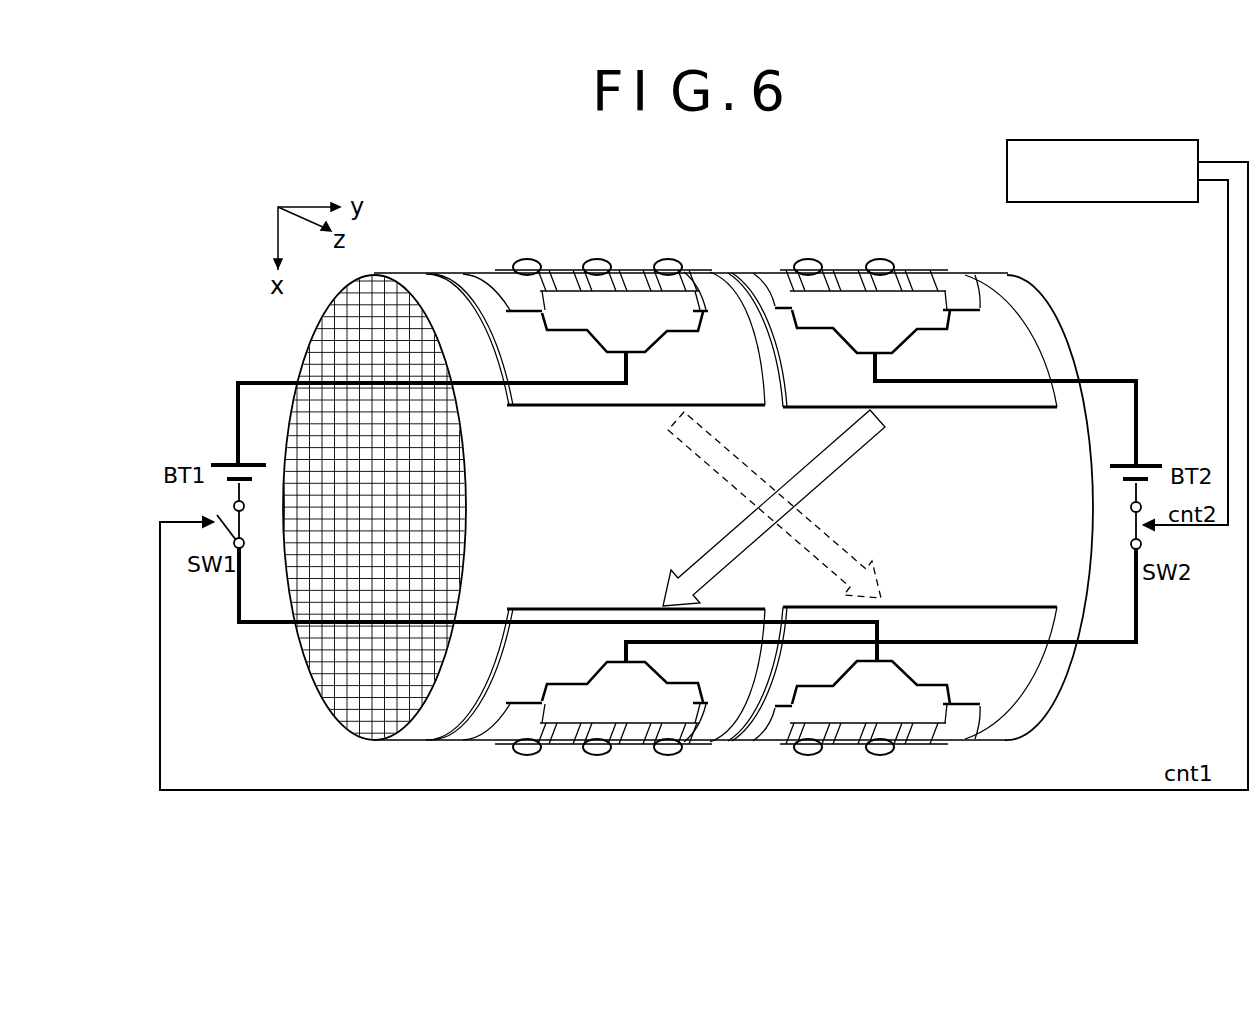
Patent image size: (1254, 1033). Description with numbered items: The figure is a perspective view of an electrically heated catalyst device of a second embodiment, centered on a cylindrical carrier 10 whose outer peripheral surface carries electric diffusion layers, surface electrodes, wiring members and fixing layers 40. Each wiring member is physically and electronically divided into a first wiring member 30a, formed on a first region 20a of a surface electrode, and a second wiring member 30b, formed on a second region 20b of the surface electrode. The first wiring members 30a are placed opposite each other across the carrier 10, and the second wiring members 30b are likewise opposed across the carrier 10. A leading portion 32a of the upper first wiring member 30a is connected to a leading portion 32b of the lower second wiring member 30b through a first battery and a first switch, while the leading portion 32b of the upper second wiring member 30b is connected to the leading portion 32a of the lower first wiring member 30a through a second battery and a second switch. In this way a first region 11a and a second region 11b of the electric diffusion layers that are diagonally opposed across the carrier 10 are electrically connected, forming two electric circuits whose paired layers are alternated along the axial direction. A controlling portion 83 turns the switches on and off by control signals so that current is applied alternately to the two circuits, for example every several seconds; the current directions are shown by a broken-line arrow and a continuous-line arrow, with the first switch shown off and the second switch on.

The carrier 10 is at (388, 511).
The first region of electric diffusion layer 11a is at (453, 273).
The second region of electric diffusion layer 11b is at (980, 277).
The first region of surface electrode 20a is at (503, 277).
The second region of surface electrode 20b is at (938, 280).
The first wiring member 30a is at (552, 262).
The second wiring member 30b is at (845, 263).
The leading portion of first wiring member 32a is at (638, 337).
The leading portion of second wiring member 32b is at (887, 337).
The fixing layer 40 is at (597, 257).
The controlling portion 83 is at (1108, 204).